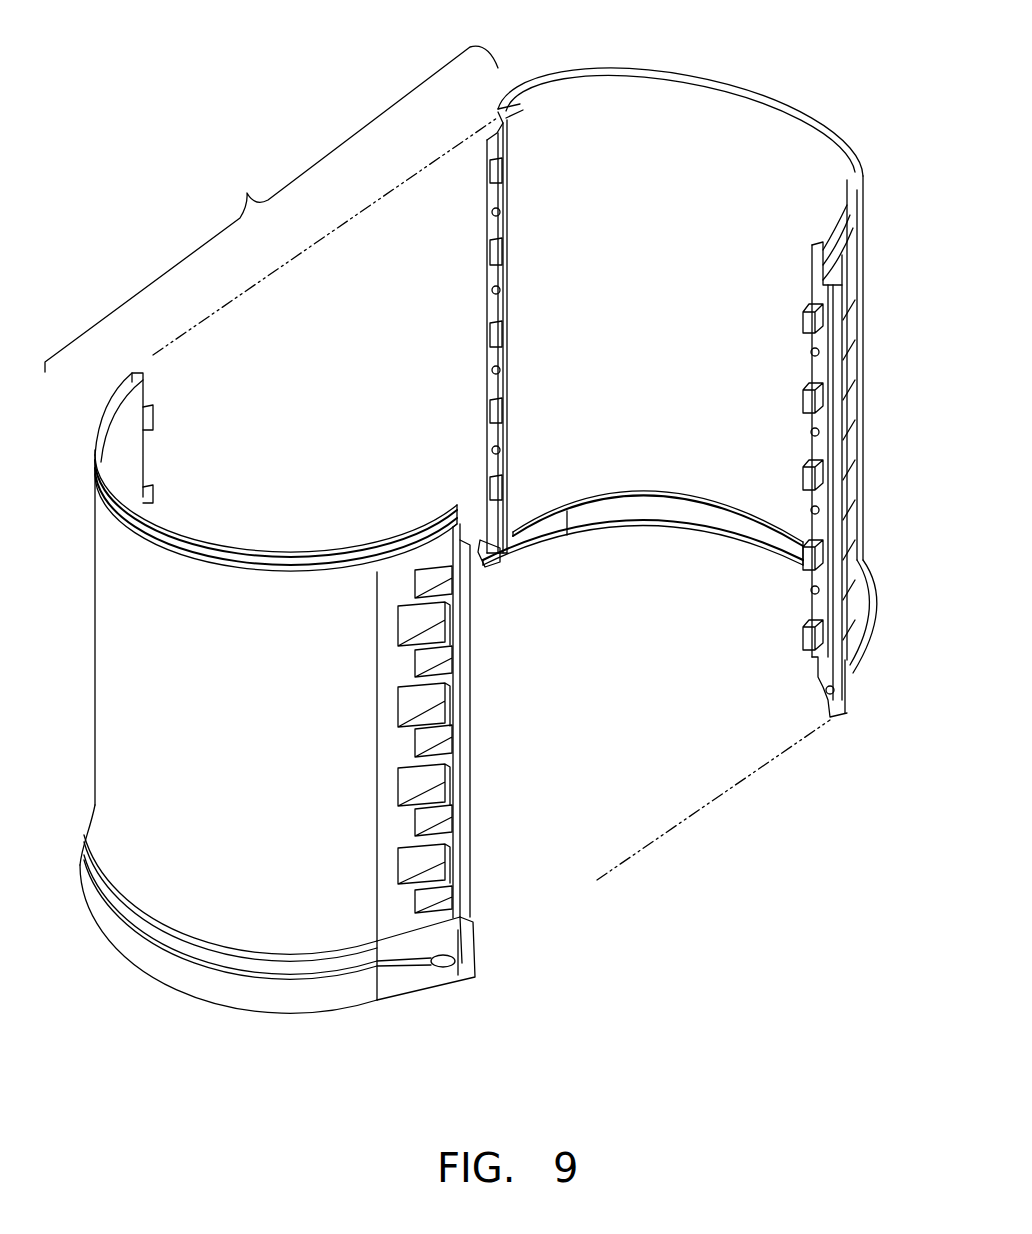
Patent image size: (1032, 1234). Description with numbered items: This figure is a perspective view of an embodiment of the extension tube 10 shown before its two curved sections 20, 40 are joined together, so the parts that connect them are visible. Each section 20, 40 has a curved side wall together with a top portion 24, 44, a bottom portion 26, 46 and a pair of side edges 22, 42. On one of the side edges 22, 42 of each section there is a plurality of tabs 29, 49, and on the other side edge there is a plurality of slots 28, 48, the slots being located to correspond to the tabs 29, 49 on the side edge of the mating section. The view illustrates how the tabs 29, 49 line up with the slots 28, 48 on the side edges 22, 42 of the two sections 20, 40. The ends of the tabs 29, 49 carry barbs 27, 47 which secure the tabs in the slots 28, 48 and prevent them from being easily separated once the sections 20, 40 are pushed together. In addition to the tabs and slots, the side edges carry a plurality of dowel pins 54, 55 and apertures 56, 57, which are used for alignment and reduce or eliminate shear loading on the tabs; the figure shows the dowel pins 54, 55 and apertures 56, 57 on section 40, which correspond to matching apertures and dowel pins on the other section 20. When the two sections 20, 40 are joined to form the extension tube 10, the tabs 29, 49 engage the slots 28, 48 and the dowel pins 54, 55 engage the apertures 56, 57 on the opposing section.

The extension tube 10 is at (437, 463).
The curved section 20 is at (435, 587).
The side edges 22 is at (147, 459).
The top portion 24 is at (95, 452).
The bottom portion 26 is at (340, 993).
The barbs 27 is at (146, 395).
The slots 28 is at (450, 702).
The tabs 29 is at (154, 418).
The curved section 40 is at (633, 366).
The side edges 42 is at (492, 283).
The top portion 44 is at (827, 130).
The bottom portion 46 is at (862, 668).
The barbs 47 is at (828, 322).
The slots 48 is at (490, 175).
The tabs 49 is at (805, 637).
The dowel pins 54 is at (492, 227).
The dowel pins 55 is at (812, 432).
The apertures 56 is at (490, 323).
The apertures 57 is at (818, 355).